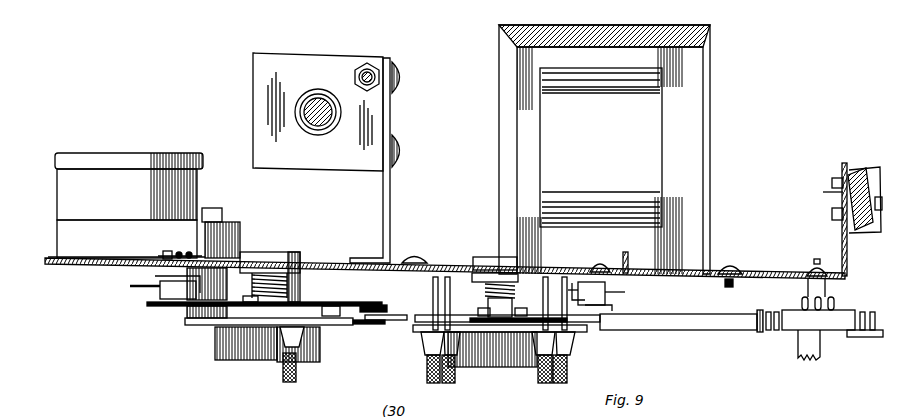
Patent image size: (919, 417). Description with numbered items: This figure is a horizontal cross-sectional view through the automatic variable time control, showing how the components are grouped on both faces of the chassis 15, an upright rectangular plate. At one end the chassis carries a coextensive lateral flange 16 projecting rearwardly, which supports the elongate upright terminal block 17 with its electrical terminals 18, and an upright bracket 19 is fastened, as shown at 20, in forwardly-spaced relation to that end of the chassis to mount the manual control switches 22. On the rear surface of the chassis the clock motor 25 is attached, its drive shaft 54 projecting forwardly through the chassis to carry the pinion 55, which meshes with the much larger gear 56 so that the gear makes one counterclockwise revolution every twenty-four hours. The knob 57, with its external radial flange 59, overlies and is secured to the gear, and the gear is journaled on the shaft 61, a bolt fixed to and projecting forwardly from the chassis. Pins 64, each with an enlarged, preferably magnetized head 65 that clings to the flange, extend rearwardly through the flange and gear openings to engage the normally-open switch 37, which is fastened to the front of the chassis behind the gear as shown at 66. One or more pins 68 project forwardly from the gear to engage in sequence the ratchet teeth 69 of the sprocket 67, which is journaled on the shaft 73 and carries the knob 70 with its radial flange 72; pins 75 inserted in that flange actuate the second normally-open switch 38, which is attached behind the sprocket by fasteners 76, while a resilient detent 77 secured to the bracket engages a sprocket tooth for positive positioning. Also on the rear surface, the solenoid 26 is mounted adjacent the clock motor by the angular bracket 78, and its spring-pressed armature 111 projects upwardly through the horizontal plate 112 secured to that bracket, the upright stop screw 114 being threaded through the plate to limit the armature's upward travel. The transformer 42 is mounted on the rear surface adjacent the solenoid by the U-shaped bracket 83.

The chassis 15 is at (45, 262).
The lateral flange 16 is at (848, 258).
The terminal block 17 is at (858, 178).
The electrical terminals 18 is at (880, 205).
The bracket 19 is at (880, 338).
The fastening 20 is at (834, 246).
The manual control switches 22 is at (842, 310).
The clock motor 25 is at (57, 181).
The solenoid 26 is at (253, 63).
The normally-open switch 37 is at (160, 286).
The normally-open switch 38 is at (612, 292).
The transformer 42 is at (665, 135).
The drive shaft 54 is at (200, 252).
The pinion 55 is at (190, 308).
The gear 56 is at (380, 304).
The knob 57 is at (232, 358).
The radial flange 59 is at (200, 326).
The shaft 61 is at (288, 252).
The pins 64 is at (296, 292).
The enlarged head 65 is at (320, 350).
The switch fastening 66 is at (165, 254).
The sprocket 67 is at (396, 321).
The pins 68 is at (325, 316).
The ratchet teeth 69 is at (623, 331).
The knob 70 is at (502, 365).
The radial flange 72 is at (575, 338).
The shaft 73 is at (487, 257).
The pins 75 is at (570, 380).
The fasteners 76 is at (598, 263).
The resilient detent 77 is at (694, 331).
The angular bracket 78 is at (384, 199).
The U-shaped bracket 83 is at (498, 57).
The armature 111 is at (316, 98).
The horizontal plate 112 is at (290, 52).
The stop screw 114 is at (369, 65).